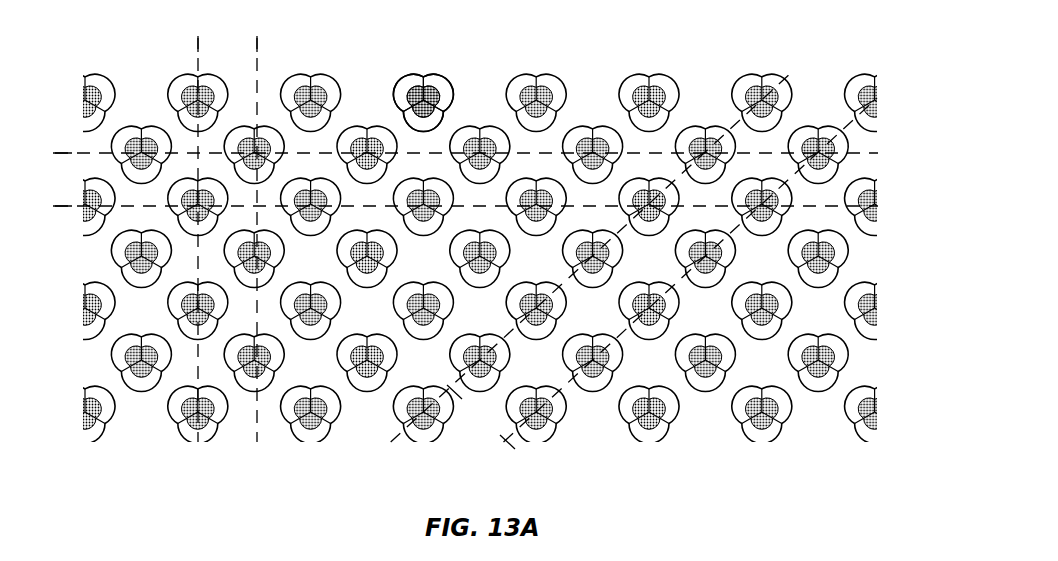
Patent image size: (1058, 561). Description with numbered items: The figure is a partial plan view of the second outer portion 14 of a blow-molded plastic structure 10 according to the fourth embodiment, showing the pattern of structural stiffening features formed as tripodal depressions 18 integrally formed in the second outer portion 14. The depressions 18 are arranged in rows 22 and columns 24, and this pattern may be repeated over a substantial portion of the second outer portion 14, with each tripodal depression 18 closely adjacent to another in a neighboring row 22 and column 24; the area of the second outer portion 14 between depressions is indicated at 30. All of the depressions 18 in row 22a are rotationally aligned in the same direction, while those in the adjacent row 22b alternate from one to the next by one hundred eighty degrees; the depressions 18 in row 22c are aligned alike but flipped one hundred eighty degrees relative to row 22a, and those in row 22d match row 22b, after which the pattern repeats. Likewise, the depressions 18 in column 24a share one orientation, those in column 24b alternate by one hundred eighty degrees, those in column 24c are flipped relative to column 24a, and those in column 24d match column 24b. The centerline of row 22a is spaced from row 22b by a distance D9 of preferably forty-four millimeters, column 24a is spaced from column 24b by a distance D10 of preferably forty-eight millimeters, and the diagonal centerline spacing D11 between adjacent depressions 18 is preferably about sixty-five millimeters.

The blow-molded plastic structure 10 is at (815, 47).
The second outer portion 14 is at (383, 317).
The tripodal depression 18 is at (435, 92).
The row 22 is at (76, 307).
The row 22a is at (880, 153).
The row 22b is at (880, 205).
The row 22c is at (880, 255).
The row 22d is at (880, 305).
The column 24 is at (144, 92).
The column 24a is at (198, 454).
The column 24b is at (257, 454).
The column 24c is at (312, 454).
The column 24d is at (370, 454).
The land area between features 30 is at (594, 102).
The row centerline spacing distance D9 is at (62, 130).
The column spacing distance D10 is at (176, 45).
The diagonal centerline spacing D11 is at (507, 441).